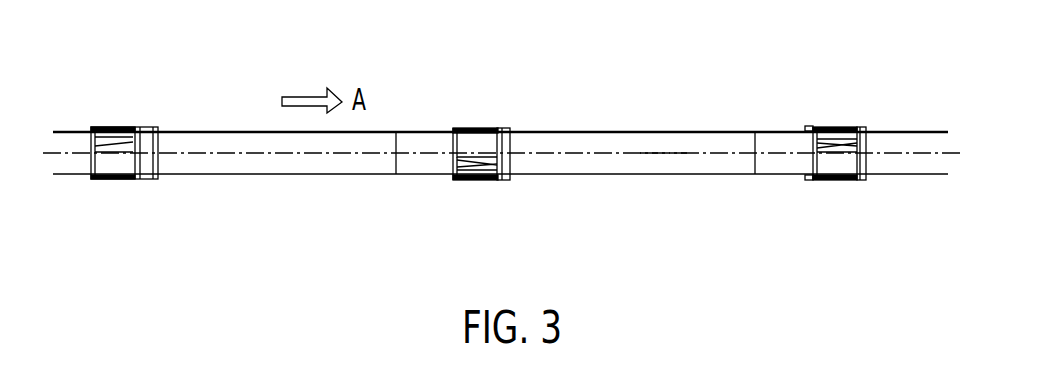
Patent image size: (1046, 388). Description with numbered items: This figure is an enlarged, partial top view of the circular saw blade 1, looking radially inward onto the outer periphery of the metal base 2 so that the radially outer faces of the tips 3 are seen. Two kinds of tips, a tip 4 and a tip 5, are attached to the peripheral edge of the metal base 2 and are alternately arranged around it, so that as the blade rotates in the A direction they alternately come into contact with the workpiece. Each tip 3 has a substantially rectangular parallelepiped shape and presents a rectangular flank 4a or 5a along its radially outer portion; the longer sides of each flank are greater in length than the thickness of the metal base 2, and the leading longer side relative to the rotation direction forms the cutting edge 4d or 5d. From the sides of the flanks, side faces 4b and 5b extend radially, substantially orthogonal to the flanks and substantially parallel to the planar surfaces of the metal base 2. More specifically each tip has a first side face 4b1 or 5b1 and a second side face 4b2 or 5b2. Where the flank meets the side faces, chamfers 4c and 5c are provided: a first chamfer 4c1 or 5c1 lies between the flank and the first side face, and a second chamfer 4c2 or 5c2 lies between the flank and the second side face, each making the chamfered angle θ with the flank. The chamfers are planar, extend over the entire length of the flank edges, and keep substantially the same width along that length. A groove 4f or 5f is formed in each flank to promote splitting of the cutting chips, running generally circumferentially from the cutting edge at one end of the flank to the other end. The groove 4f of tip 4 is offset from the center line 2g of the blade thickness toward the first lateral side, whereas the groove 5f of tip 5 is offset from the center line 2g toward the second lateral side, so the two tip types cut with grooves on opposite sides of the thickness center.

The circular saw blade 1 is at (271, 56).
The metal base 2 is at (697, 127).
The center line 2g is at (661, 155).
The tip 3 is at (518, 142).
The tip 4 is at (145, 116).
The flank 4a is at (822, 163).
The side face 4b is at (881, 144).
The first side face 4b1 is at (840, 130).
The second side face 4b2 is at (834, 180).
The chamfer 4c is at (855, 142).
The first chamfer 4c1 is at (830, 127).
The second chamfer 4c2 is at (820, 180).
The cutting edge 4d is at (860, 163).
The groove 4f is at (813, 145).
The tip 5 is at (458, 120).
The flank 5a is at (462, 145).
The side face 5b is at (524, 144).
The first side face 5b1 is at (482, 130).
The second side face 5b2 is at (480, 180).
The chamfer 5c is at (502, 143).
The first chamfer 5c1 is at (470, 128).
The second chamfer 5c2 is at (470, 180).
The cutting edge 5d is at (512, 137).
The groove 5f is at (456, 160).